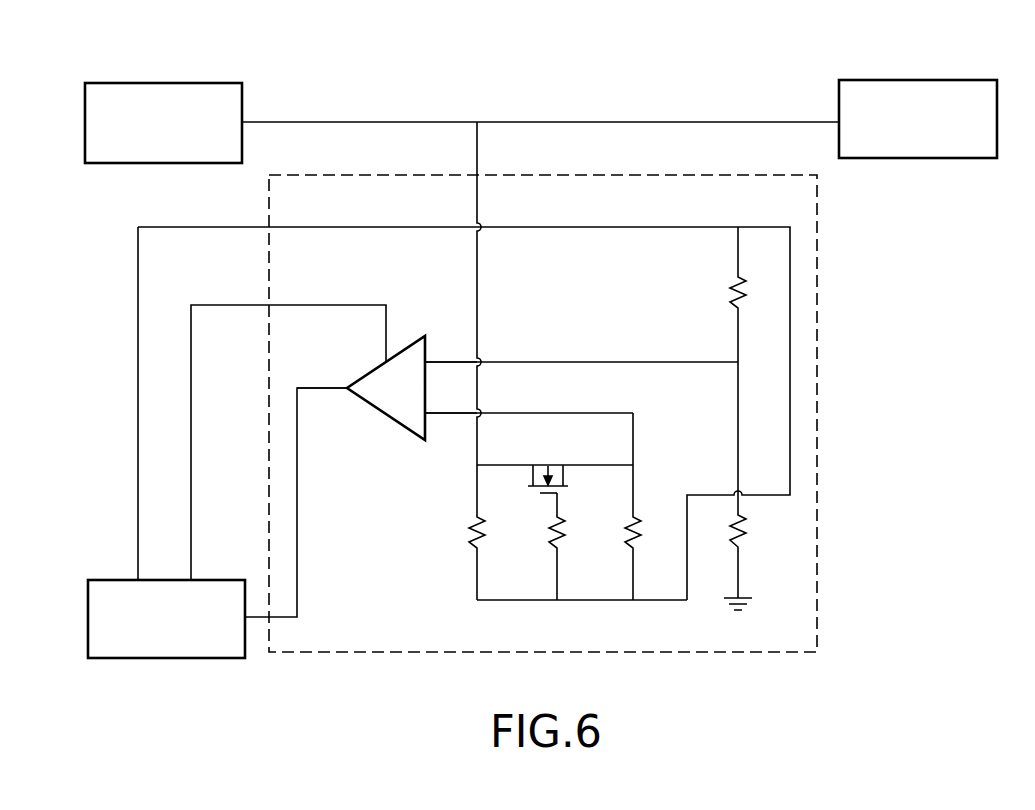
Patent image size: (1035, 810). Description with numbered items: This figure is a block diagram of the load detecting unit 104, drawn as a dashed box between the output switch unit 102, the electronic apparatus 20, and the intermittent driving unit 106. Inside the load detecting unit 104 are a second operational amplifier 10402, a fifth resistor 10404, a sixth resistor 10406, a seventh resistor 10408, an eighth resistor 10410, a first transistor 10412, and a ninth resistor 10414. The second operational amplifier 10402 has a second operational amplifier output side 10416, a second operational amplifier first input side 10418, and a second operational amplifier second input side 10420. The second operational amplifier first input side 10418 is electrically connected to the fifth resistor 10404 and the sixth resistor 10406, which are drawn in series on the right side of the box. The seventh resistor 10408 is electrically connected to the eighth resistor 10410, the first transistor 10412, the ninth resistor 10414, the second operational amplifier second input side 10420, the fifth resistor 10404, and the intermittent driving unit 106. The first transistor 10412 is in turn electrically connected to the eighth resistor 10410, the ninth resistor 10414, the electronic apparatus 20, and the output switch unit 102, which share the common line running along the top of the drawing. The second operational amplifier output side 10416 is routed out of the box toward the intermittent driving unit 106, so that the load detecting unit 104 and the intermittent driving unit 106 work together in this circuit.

The electronic apparatus 20 is at (917, 85).
The output switch unit 102 is at (162, 90).
The load detecting unit 104 is at (815, 547).
The intermittent driving unit 106 is at (113, 583).
The second operational amplifier 10402 is at (394, 352).
The fifth resistor 10404 is at (733, 293).
The sixth resistor 10406 is at (748, 535).
The seventh resistor 10408 is at (643, 538).
The eighth resistor 10410 is at (567, 535).
The first transistor 10412 is at (541, 462).
The ninth resistor 10414 is at (468, 543).
The second operational amplifier output side 10416 is at (352, 389).
The second operational amplifier first input side 10418 is at (447, 348).
The second operational amplifier second input side 10420 is at (430, 417).